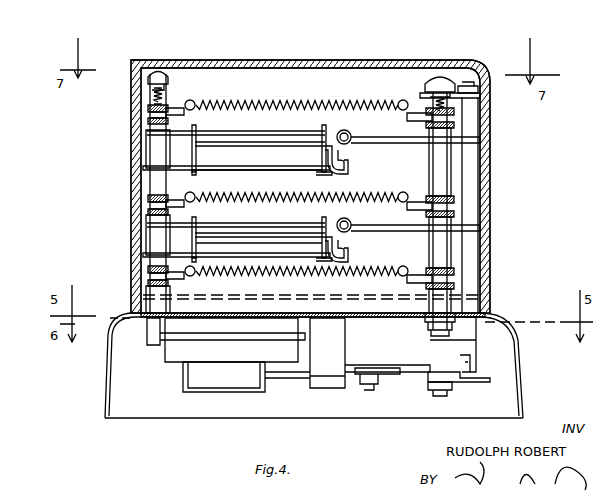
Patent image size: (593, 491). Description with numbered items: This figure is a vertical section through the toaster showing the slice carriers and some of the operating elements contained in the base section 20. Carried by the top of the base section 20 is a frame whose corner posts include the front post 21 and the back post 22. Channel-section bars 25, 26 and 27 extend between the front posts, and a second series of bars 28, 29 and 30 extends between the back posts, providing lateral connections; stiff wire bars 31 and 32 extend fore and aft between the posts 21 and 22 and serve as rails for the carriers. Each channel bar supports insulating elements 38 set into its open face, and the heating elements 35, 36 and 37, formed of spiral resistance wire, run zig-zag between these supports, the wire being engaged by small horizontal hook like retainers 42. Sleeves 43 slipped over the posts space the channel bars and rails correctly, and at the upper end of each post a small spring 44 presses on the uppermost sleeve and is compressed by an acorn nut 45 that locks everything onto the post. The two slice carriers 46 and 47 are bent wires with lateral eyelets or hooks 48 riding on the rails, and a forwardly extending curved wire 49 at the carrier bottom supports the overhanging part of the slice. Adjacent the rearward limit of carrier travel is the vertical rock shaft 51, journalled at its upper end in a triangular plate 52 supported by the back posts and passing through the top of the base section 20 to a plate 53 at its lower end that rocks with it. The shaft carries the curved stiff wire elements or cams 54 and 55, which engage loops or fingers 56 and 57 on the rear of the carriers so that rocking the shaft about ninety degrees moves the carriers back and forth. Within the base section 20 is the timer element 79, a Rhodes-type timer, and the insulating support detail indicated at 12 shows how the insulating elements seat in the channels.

The insulating support view 12 is at (398, 168).
The base section 20 is at (167, 430).
The corner post 21 is at (147, 150).
The corner post 22 is at (452, 160).
The bar 25 is at (150, 110).
The bar 26 is at (150, 200).
The bar 27 is at (150, 274).
The bar 28 is at (453, 122).
The bar 29 is at (453, 203).
The bar 30 is at (453, 282).
The bar 31 is at (378, 140).
The bar 32 is at (386, 232).
The heating element 35 is at (302, 97).
The heating element 36 is at (284, 188).
The heating element 37 is at (283, 283).
The insulating element 38 is at (150, 123).
The hook like retainer 42 is at (192, 101).
The sleeve 43 is at (150, 138).
The spring 44 is at (150, 96).
The acorn nut 45 is at (150, 81).
The slice carrier 46 is at (230, 178).
The slice carrier 47 is at (250, 248).
The eyelets or hooks 48 is at (275, 123).
The curved wire 49 is at (176, 166).
The rock shaft 51 is at (462, 275).
The triangular plate 52 is at (478, 98).
The plate 53 is at (500, 380).
The curved stiff wire element or cam 54 is at (364, 148).
The curved stiff wire element or cam 55 is at (386, 234).
The loop or finger 56 is at (343, 129).
The loop or finger 57 is at (352, 222).
The timer element 79 is at (201, 381).